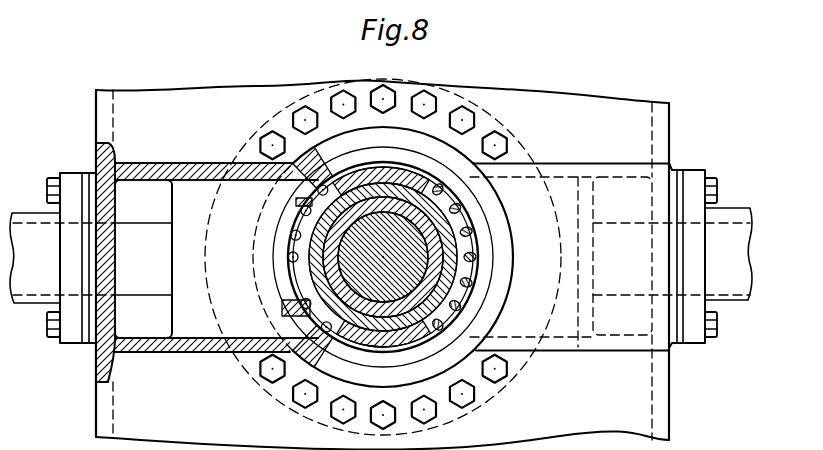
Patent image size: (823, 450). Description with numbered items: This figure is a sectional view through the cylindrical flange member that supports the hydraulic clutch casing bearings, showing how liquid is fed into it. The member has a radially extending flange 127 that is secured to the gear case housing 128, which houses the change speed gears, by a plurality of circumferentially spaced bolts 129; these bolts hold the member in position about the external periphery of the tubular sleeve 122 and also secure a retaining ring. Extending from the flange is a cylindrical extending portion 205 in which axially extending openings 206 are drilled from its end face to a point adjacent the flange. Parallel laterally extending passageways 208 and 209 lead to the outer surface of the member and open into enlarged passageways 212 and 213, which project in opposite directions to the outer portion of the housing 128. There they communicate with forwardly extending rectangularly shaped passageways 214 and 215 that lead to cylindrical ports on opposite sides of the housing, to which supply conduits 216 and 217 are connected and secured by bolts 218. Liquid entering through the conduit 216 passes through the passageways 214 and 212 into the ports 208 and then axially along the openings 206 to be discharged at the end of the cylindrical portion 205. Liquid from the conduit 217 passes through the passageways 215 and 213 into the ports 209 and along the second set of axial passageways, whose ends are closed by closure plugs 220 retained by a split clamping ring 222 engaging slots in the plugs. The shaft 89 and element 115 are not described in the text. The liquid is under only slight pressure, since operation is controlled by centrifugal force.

The gear case housing 128 is at (200, 100).
The radially extending flange 127 is at (430, 88).
The bolts 129 is at (338, 92).
The cylindrical extending portion 205 is at (381, 170).
The laterally extending passageway 209 is at (478, 252).
The shaft 89 is at (350, 238).
The closure plugs 220 is at (458, 210).
The laterally extending passageway 208 is at (300, 190).
The axially extending openings 206 is at (292, 241).
The split clamping ring 222 is at (420, 335).
The inner race 115 is at (386, 350).
The tubular sleeve 122 is at (377, 348).
The enlarged passageway 212 is at (203, 330).
The rectangularly shaped passageway 214 is at (100, 346).
The supply conduit 216 is at (24, 232).
The bolts 218 is at (52, 178).
The rectangularly shaped passageway 215 is at (640, 327).
The supply conduit 217 is at (732, 222).
The enlarged passageway 213 is at (562, 342).